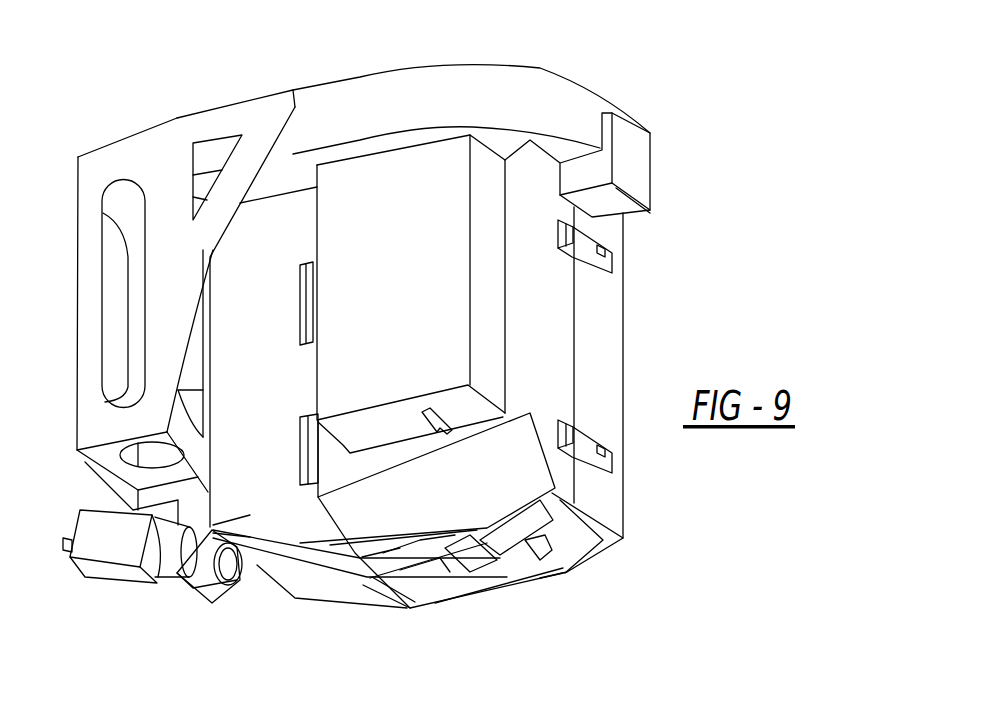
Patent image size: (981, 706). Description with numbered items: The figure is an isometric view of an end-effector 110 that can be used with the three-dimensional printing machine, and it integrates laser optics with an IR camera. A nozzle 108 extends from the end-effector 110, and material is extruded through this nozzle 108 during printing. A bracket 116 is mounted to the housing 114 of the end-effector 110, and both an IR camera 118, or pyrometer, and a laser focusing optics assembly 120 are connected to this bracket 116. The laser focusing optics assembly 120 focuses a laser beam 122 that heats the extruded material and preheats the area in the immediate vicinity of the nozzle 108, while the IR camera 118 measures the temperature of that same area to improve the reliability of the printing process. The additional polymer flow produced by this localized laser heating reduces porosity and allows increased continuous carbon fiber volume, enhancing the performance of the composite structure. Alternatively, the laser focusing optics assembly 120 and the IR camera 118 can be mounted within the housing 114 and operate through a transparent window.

The end-effector 110 is at (533, 44).
The bracket 116 is at (173, 150).
The housing 114 is at (602, 322).
The IR camera 118 is at (127, 570).
The laser focusing optics assembly 120 is at (207, 598).
The laser beam 122 is at (402, 573).
The nozzle 108 is at (487, 562).